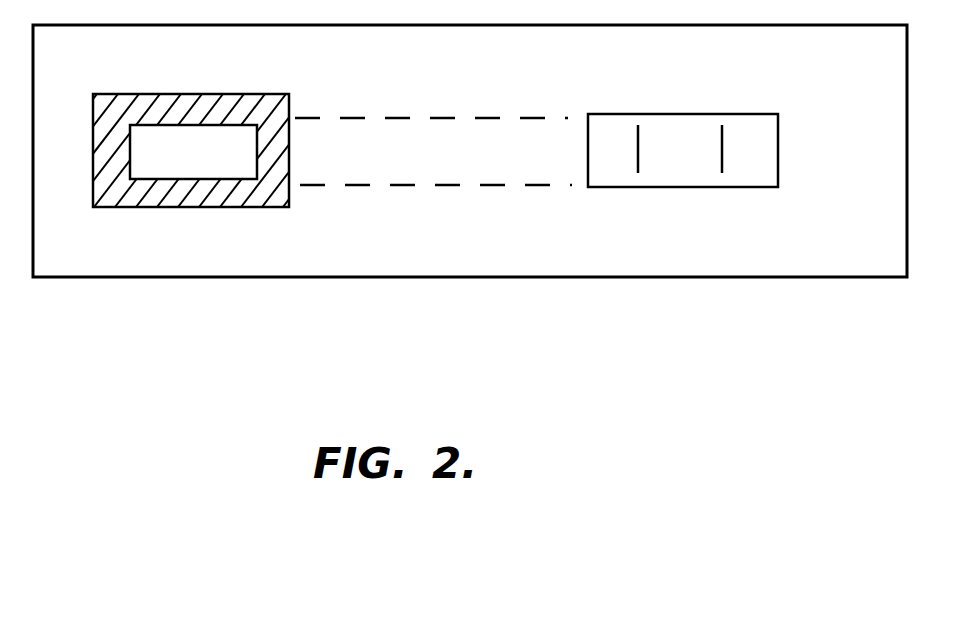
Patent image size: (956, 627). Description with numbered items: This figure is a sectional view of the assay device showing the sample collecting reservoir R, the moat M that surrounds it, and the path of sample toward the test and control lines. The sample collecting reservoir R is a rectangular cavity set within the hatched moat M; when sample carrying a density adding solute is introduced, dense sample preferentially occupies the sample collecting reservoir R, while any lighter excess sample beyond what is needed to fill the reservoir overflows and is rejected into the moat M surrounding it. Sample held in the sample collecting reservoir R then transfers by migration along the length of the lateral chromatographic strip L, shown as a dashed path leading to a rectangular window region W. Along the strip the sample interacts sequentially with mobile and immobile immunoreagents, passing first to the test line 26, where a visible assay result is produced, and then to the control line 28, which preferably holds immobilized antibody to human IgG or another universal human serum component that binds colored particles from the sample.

The test line 26 is at (638, 146).
The control line 28 is at (722, 146).
The moat M is at (190, 197).
The sample collecting reservoir R is at (201, 166).
The lateral chromatographic strip L is at (458, 165).
The wafer W is at (667, 168).